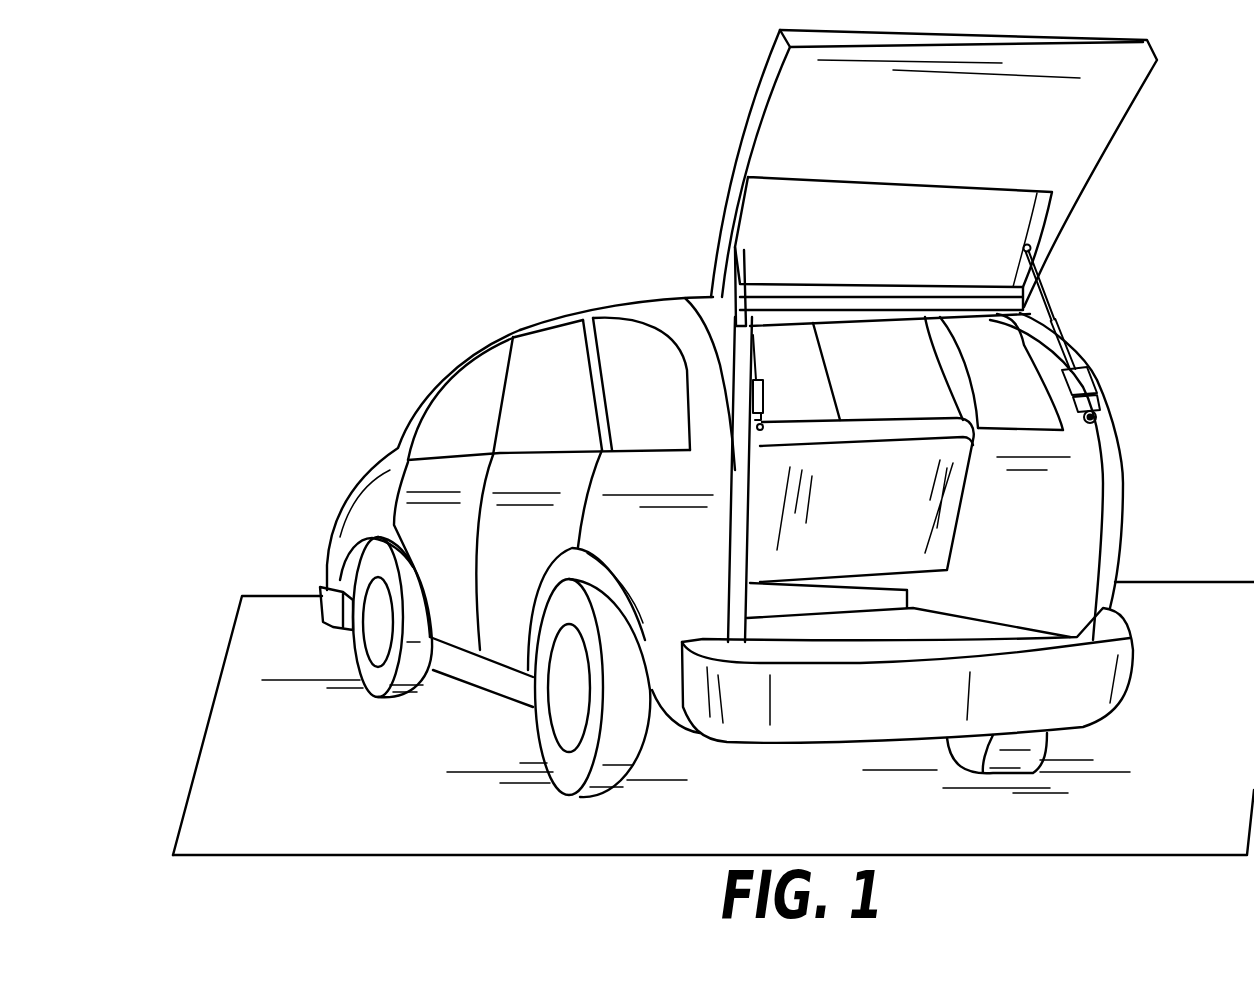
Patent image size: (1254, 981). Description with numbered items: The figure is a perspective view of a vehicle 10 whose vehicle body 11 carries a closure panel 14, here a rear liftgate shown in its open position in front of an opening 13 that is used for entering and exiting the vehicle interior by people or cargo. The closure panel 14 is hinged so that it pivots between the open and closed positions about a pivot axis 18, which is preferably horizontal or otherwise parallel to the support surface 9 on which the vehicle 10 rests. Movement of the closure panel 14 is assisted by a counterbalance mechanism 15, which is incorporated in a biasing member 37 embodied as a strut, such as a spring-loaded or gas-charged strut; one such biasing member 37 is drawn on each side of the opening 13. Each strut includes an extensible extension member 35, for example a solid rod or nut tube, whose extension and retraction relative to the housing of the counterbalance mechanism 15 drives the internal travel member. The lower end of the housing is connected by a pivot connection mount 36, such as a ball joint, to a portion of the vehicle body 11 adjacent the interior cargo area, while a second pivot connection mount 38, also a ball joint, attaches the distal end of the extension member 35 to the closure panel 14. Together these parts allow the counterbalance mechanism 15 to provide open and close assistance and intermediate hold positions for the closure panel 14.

The support surface 9 is at (784, 806).
The vehicle 10 is at (1101, 323).
The vehicle body 11 is at (680, 566).
The opening 13 is at (1053, 549).
The closure panel 14 is at (906, 131).
The counterbalance mechanism 15 is at (970, 315).
The pivot axis 18 is at (693, 296).
The extension member 35 is at (1045, 270).
The pivot connection mount 36 is at (1100, 410).
The biasing member 37 is at (1064, 312).
The second pivot connection mount 38 is at (1036, 249).